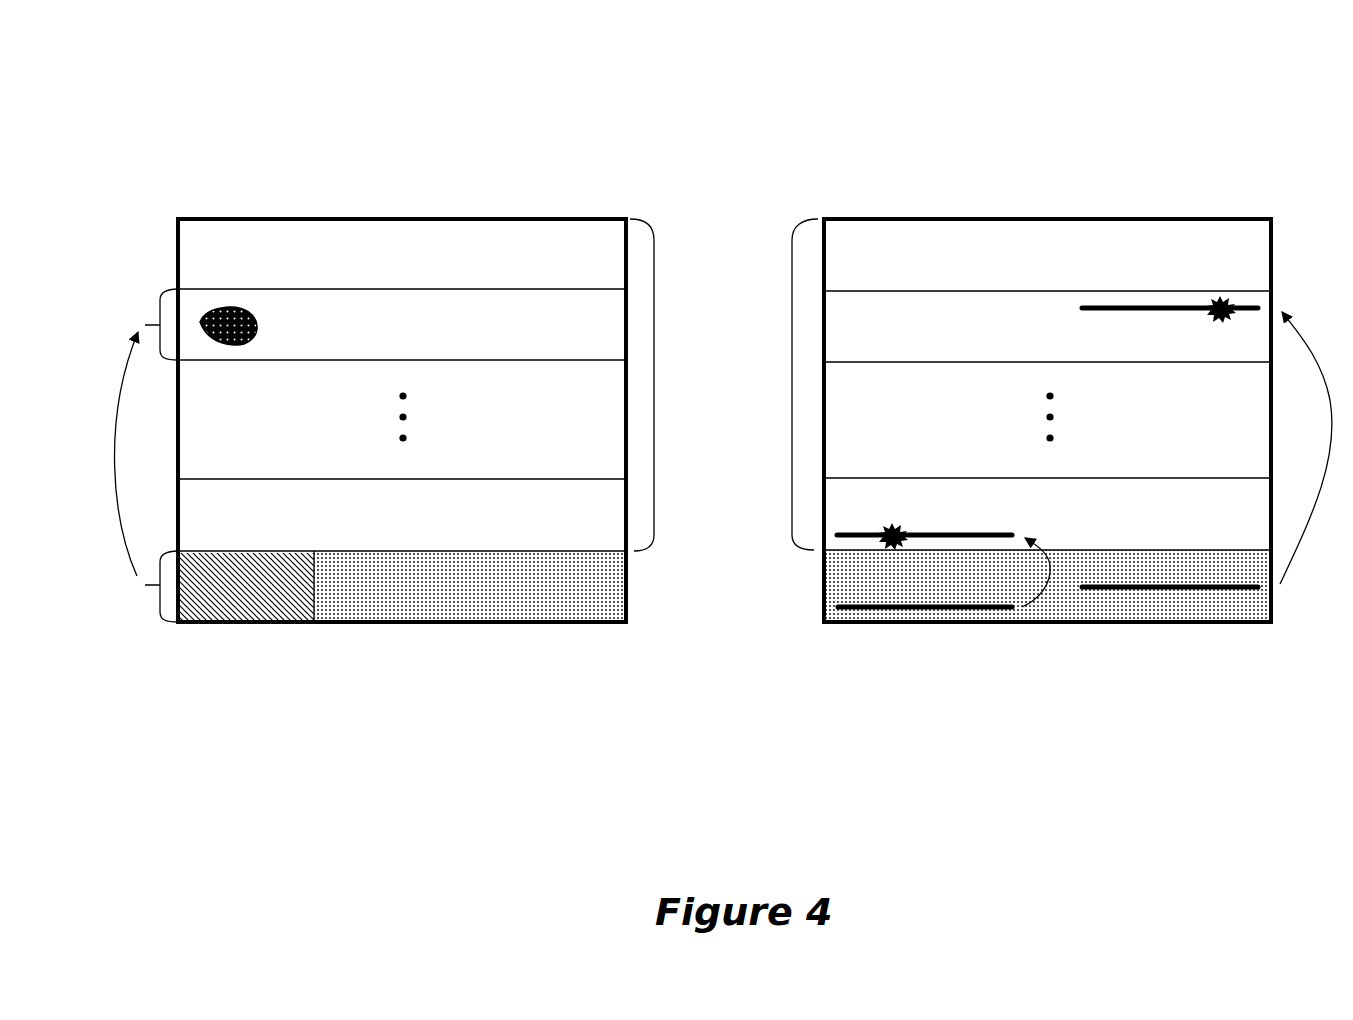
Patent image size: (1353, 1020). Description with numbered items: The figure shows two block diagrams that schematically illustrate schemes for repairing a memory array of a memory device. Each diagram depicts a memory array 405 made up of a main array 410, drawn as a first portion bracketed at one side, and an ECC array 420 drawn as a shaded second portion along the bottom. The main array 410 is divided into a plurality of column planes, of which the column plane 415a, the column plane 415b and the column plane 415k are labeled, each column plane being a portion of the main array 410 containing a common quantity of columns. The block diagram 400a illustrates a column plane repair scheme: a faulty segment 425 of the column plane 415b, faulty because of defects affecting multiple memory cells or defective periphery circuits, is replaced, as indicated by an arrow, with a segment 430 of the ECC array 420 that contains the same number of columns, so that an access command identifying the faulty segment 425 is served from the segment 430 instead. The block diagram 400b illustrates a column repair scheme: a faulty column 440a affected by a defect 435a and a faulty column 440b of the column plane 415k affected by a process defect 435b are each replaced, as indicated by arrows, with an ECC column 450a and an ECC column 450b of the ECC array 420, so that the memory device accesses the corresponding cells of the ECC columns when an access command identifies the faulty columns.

The block diagram 400a is at (170, 141).
The block diagram 400b is at (818, 141).
The memory array 405 is at (390, 218).
The main array 410 is at (652, 243).
The column plane 415a is at (724, 258).
The column plane 415b is at (724, 330).
The column plane 415k is at (724, 494).
The ECC array 420 is at (618, 590).
The faulty segment 425 is at (264, 324).
The segment 430 is at (318, 586).
The defect 435a is at (1206, 322).
The process defect 435b is at (902, 516).
The faulty column 440a is at (1248, 305).
The faulty column 440b is at (988, 532).
The ECC column 450a is at (1172, 591).
The ECC column 450b is at (920, 612).